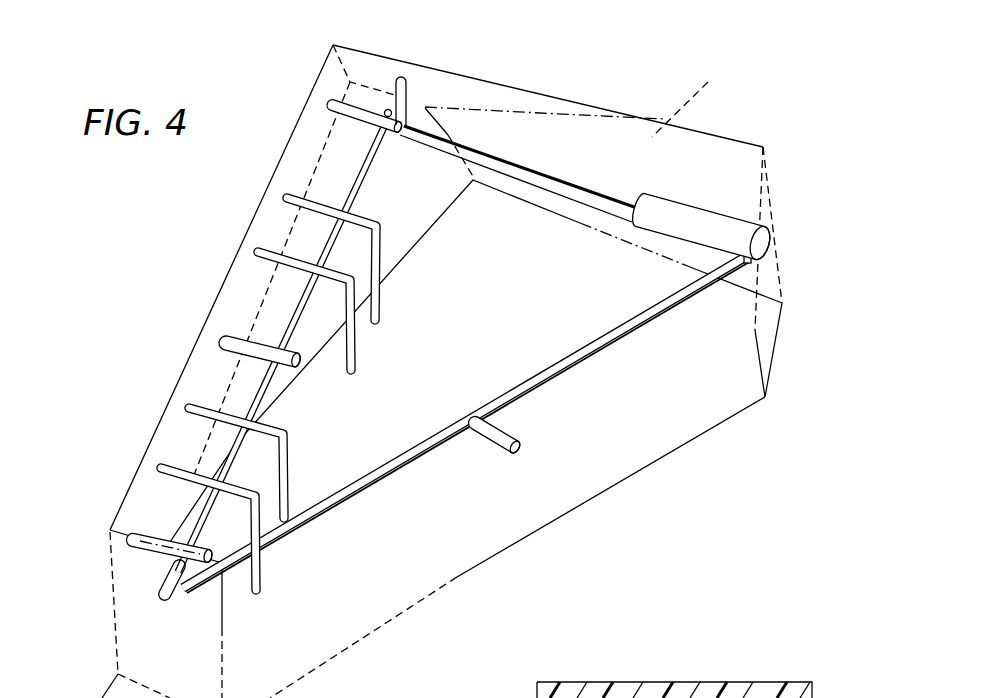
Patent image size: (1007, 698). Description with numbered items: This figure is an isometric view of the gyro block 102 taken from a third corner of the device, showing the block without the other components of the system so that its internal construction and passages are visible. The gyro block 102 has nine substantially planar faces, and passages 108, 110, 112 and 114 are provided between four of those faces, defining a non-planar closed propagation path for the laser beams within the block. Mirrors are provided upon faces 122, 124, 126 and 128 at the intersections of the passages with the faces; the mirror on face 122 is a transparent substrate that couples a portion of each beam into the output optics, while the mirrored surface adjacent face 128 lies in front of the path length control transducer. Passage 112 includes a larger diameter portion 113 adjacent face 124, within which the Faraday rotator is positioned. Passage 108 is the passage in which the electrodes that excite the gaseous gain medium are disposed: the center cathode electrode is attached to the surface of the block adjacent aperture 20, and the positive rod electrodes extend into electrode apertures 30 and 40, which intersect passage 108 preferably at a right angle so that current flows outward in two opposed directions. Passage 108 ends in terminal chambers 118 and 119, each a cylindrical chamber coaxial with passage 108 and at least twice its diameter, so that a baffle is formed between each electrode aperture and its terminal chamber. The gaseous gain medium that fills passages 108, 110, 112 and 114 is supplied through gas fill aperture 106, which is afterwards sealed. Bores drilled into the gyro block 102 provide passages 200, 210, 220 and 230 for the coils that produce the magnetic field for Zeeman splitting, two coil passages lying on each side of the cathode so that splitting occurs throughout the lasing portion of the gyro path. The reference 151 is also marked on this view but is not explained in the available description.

The aperture 20 is at (240, 335).
The electrode aperture 30 is at (140, 532).
The electrode aperture 40 is at (333, 106).
The gyro block 102 is at (630, 465).
The gas fill aperture 106 is at (510, 437).
The passage 108 is at (368, 166).
The passage 110 is at (333, 503).
The passage 112 is at (561, 178).
The larger diameter portion 113 is at (688, 217).
The passage 114 is at (403, 112).
The terminal chamber 118 is at (170, 600).
The terminal chamber 119 is at (392, 100).
The face 122 is at (83, 697).
The face 124 is at (770, 348).
The face 126 is at (508, 90).
The face 128 is at (333, 183).
The corner 151 is at (691, 96).
The passage 200 is at (378, 250).
The passage 210 is at (355, 340).
The passage 220 is at (285, 466).
The passage 230 is at (262, 572).